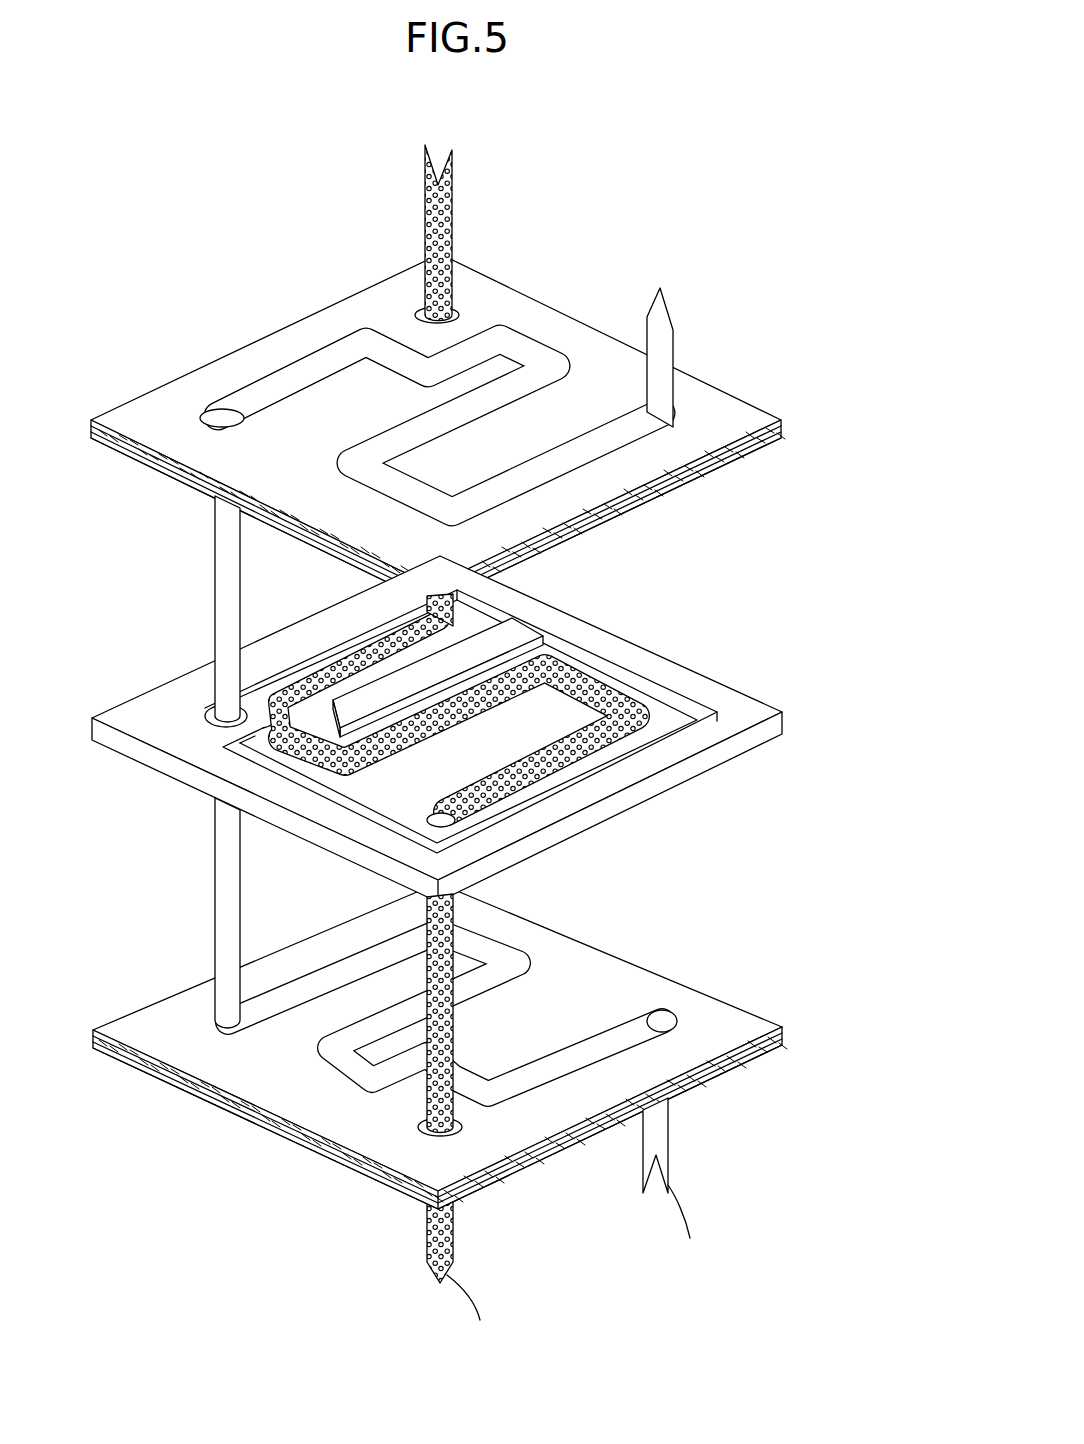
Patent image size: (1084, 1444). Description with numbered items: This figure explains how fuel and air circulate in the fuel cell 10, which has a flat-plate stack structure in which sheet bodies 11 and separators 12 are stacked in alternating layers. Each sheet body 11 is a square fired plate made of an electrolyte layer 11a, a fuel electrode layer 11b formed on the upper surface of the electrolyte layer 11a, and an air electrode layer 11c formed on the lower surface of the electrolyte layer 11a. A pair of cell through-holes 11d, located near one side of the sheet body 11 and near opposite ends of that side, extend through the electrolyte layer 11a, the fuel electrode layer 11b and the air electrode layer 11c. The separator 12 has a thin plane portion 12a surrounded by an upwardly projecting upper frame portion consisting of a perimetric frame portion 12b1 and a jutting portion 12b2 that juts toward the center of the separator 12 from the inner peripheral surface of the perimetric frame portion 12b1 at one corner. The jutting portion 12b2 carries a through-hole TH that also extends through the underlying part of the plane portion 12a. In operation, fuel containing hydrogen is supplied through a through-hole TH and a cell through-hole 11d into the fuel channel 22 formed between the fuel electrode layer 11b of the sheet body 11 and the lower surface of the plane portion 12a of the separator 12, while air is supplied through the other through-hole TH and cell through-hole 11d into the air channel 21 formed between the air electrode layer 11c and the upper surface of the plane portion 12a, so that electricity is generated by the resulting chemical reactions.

The fuel cell 10 is at (497, 745).
The sheet body 11 is at (738, 415).
The electrolyte layer 11a is at (788, 426).
The fuel electrode layer 11b is at (788, 421).
The air electrode layer 11c is at (790, 432).
The cell through-hole 11d is at (428, 311).
The separator 12 is at (717, 565).
The plane portion 12a is at (588, 676).
The perimetric frame portion 12b1 is at (756, 715).
The jutting portion 12b2 is at (266, 735).
The air channel 21 is at (548, 674).
The fuel channel 22 is at (556, 332).
The through-hole TH is at (208, 714).